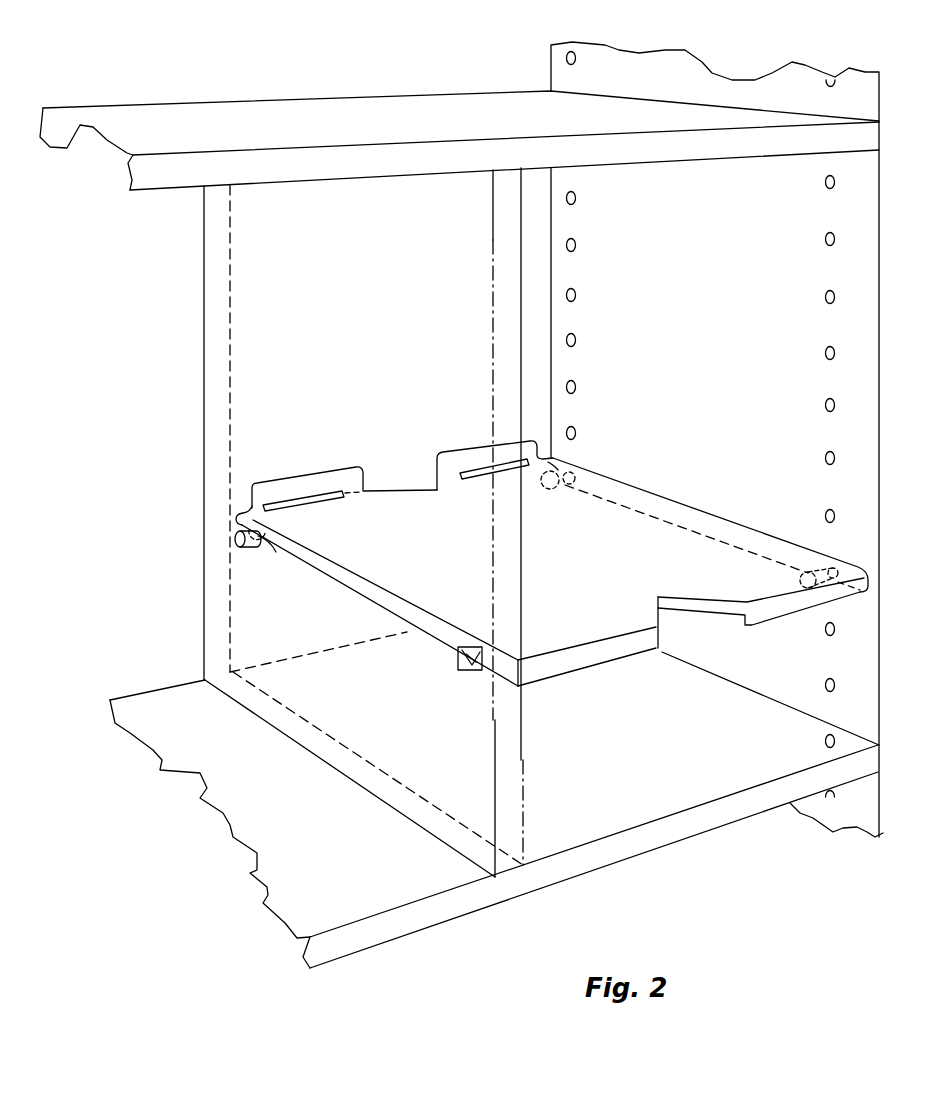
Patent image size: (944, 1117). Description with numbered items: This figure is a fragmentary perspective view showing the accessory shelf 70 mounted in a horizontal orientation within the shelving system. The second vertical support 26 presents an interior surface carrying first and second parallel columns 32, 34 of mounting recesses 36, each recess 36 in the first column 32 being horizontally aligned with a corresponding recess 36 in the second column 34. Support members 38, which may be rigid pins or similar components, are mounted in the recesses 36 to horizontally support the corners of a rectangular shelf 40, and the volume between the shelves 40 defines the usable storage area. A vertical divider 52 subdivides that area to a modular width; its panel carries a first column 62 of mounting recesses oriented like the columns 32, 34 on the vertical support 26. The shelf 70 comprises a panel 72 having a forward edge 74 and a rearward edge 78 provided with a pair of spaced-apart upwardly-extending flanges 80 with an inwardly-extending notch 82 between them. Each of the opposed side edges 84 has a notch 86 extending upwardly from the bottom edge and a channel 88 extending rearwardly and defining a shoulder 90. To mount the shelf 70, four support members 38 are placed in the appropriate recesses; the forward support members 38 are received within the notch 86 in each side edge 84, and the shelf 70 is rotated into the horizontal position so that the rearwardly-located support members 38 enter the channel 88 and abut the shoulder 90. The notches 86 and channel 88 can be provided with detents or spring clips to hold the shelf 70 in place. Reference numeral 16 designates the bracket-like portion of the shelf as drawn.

The bracket tab 16 is at (708, 610).
The second vertical support 26 is at (718, 71).
The first column of mounting recesses 32 is at (600, 279).
The second column of mounting recesses 34 is at (780, 271).
The mounting recesses 36 is at (574, 334).
The support members 38 is at (235, 541).
The rectangular shelf 40 is at (415, 107).
The vertical divider 52 is at (202, 337).
The first column of mounting recesses 62 is at (258, 388).
The shelf 70 is at (507, 570).
The panel 72 is at (571, 633).
The forward edge 74 is at (606, 656).
The rearward edge 78 is at (255, 502).
The upwardly-extending flanges 80 is at (307, 490).
The inwardly-extending notch 82 is at (392, 488).
The side edges 84 is at (432, 633).
The notch 86 is at (480, 648).
The channel 88 is at (243, 482).
The shoulder 90 is at (276, 552).